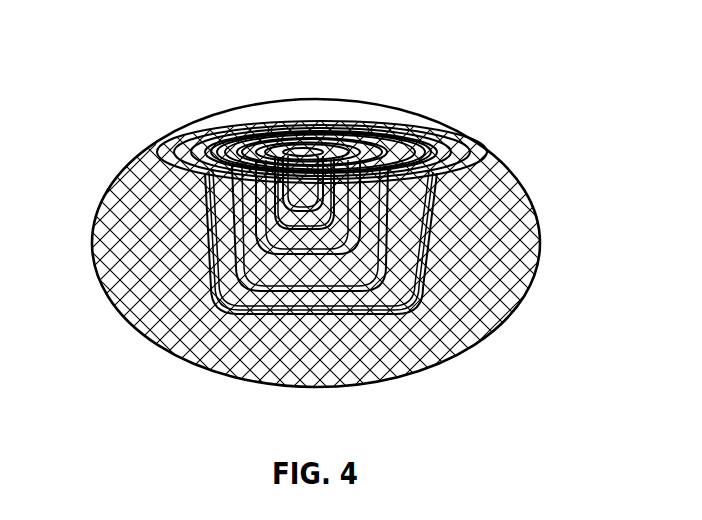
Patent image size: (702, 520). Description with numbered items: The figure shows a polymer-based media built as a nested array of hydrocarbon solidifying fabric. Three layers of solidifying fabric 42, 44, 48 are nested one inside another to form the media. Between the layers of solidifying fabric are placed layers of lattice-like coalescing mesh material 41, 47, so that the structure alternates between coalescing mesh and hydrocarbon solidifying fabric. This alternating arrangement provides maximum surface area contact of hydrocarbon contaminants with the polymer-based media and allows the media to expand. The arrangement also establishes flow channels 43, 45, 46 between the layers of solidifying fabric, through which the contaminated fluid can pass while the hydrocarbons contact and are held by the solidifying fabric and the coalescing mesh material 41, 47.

The coalescing mesh material 41 is at (303, 178).
The solidifying fabric 42 is at (200, 144).
The flow channel 43 is at (360, 183).
The solidifying fabric 44 is at (185, 140).
The flow channel 45 is at (463, 150).
The flow channel 46 is at (150, 168).
The coalescing mesh material 47 is at (377, 360).
The solidifying fabric 48 is at (210, 250).